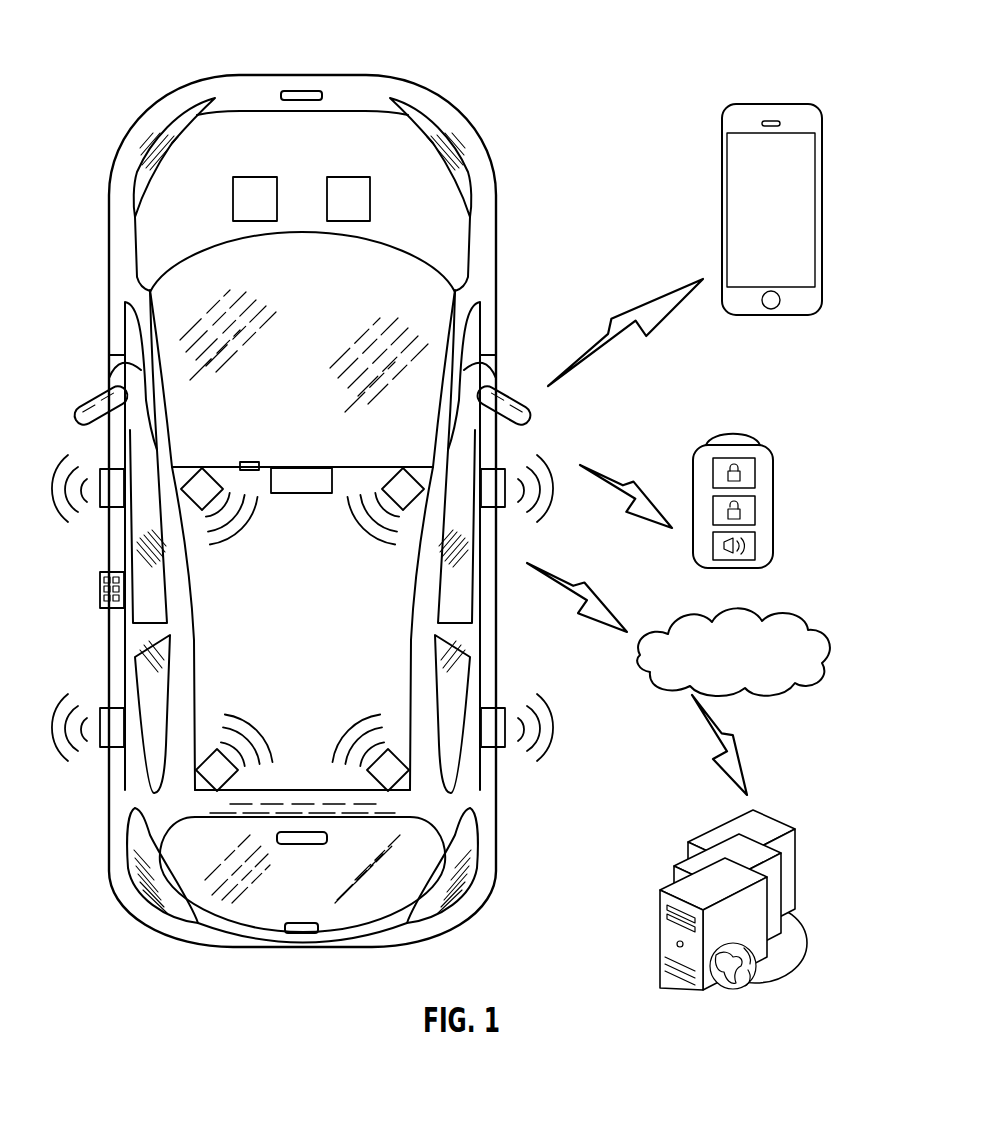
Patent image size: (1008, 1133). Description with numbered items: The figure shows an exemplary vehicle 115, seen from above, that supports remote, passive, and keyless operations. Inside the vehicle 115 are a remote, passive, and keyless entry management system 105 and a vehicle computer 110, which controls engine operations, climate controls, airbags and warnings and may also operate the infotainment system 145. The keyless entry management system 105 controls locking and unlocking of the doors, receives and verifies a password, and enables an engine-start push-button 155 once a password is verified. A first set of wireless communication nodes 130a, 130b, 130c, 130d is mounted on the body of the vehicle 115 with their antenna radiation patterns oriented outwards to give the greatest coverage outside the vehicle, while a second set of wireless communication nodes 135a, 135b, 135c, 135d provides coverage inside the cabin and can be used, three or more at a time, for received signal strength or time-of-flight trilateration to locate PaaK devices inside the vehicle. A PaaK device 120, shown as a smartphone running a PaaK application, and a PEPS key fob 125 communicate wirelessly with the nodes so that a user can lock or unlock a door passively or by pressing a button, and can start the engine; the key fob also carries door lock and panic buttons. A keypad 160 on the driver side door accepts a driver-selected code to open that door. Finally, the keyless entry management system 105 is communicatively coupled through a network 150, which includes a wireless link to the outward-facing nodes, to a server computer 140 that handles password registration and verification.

The keyless entry management system 105 is at (254, 177).
The vehicle computer 110 is at (350, 177).
The vehicle 115 is at (300, 75).
The PaaK device 120 is at (823, 197).
The PEPS key fob 125 is at (774, 493).
The wireless communication node 130a is at (110, 510).
The wireless communication node 130b is at (110, 750).
The wireless communication node 130c is at (497, 508).
The wireless communication node 130d is at (497, 748).
The wireless communication node 135a is at (195, 492).
The wireless communication node 135b is at (410, 488).
The wireless communication node 135c is at (215, 773).
The wireless communication node 135d is at (392, 773).
The server computer 140 is at (798, 852).
The infotainment system 145 is at (302, 494).
The network 150 is at (831, 648).
The engine-start push-button 155 is at (250, 461).
The keypad 160 is at (97, 589).